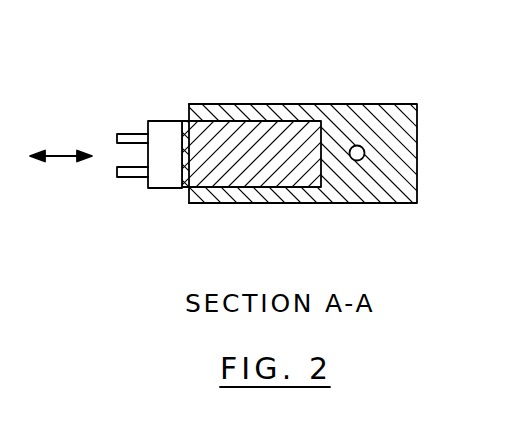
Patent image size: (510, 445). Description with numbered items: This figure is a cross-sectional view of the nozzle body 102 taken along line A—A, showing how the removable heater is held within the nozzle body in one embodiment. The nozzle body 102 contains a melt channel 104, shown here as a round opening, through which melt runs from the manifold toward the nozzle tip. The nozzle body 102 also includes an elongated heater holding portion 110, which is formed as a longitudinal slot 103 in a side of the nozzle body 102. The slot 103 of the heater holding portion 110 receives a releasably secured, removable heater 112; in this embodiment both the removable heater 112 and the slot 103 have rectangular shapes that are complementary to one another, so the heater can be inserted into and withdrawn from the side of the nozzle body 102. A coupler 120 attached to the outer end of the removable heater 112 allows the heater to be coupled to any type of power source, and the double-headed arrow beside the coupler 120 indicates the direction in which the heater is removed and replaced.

The nozzle body 102 is at (237, 105).
The slot 103 is at (230, 190).
The melt channel 104 is at (359, 160).
The heater holding portion 110 is at (205, 105).
The removable heater 112 is at (295, 135).
The coupler 120 is at (155, 126).